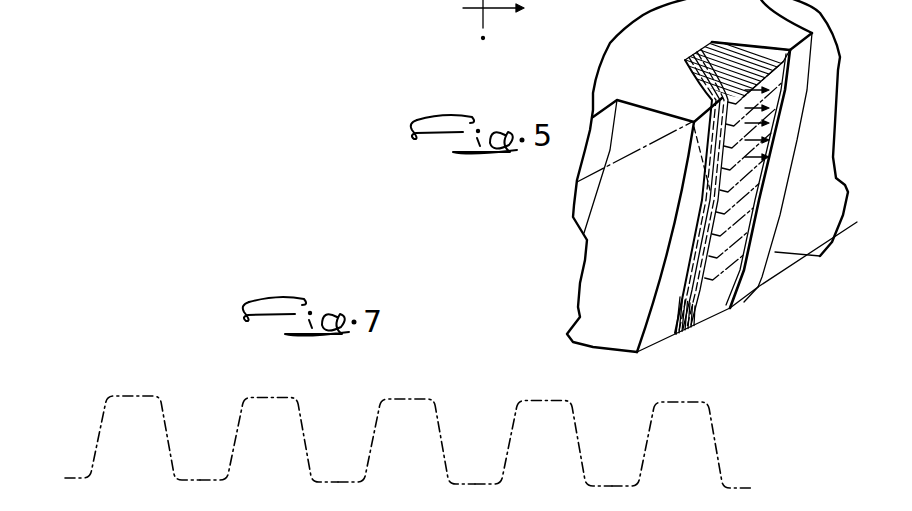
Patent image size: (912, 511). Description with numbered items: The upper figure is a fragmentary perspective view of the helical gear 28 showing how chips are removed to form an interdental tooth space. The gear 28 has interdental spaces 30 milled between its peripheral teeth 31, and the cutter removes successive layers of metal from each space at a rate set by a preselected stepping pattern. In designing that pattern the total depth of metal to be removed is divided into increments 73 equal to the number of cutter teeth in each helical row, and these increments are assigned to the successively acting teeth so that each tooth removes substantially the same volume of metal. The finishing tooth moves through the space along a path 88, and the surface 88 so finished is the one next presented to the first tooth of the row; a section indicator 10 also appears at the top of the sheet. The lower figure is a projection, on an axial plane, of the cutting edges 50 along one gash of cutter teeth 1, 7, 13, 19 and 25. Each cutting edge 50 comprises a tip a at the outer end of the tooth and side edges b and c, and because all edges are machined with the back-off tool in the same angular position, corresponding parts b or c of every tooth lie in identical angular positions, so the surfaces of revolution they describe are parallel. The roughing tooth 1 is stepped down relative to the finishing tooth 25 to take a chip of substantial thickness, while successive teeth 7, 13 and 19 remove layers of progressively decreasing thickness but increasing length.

In FIG. 5, the viewing direction indicator 10 is at (476, 20).
In FIG. 5, the helical gear 28 is at (603, 78).
In FIG. 5, the interdental spaces 30 is at (725, 46).
In FIG. 5, the peripheral teeth 31 is at (760, 282).
In FIG. 5, the increments 73 is at (769, 157).
In FIG. 5, the path 88 is at (692, 106).
In FIG. 7, the cutting edge 50 is at (106, 401).
In FIG. 7, the tip a is at (133, 395).
In FIG. 7, the side edge b is at (165, 425).
In FIG. 7, the side edge c is at (98, 436).
In FIG. 7, the finishing tooth 25 is at (138, 448).
In FIG. 7, the cutter tooth 19 is at (285, 448).
In FIG. 7, the cutter tooth 13 is at (420, 451).
In FIG. 7, the cutter tooth 7 is at (562, 442).
In FIG. 7, the roughing tooth 1 is at (703, 447).